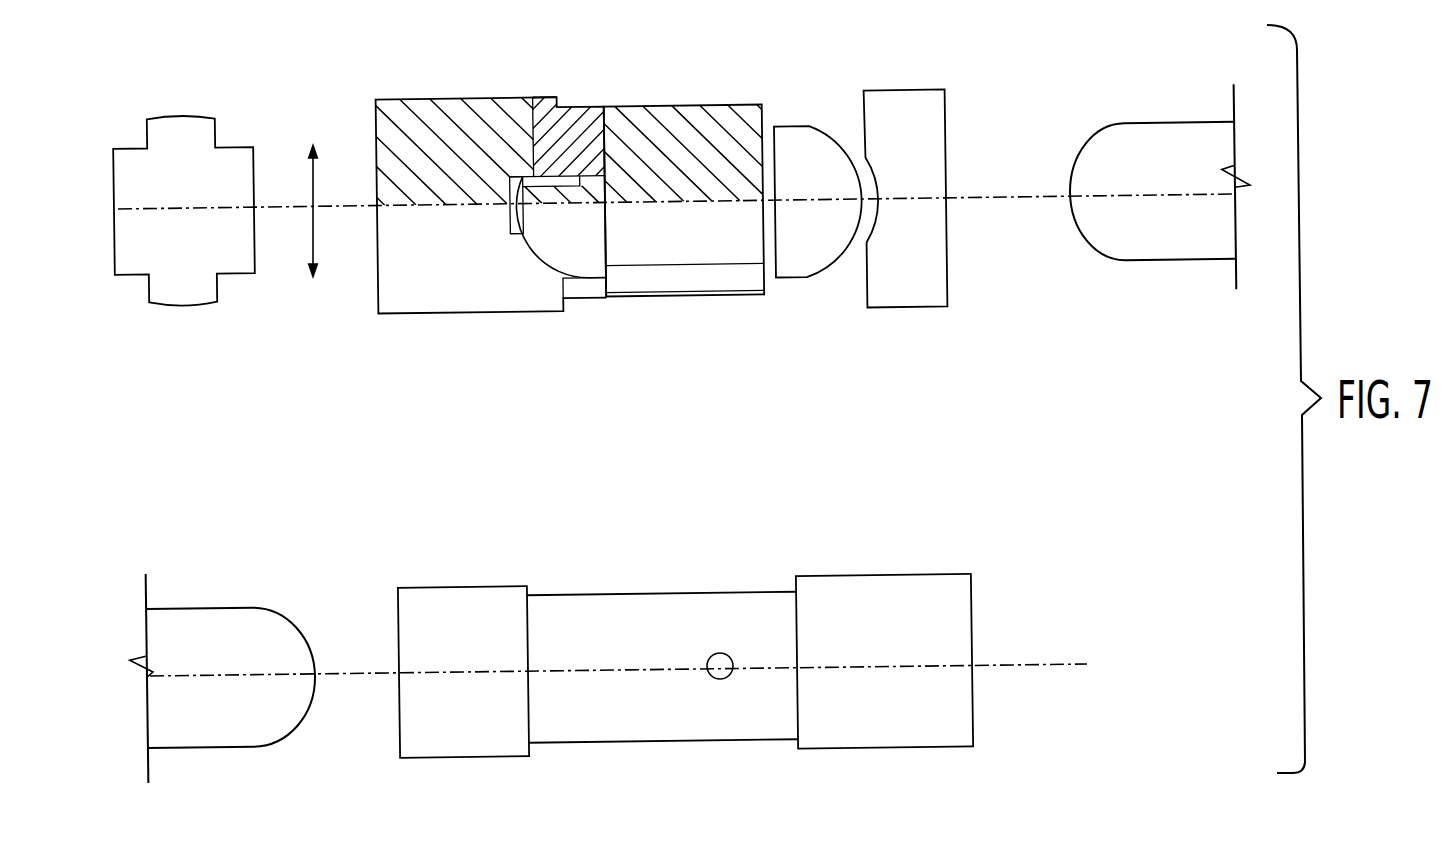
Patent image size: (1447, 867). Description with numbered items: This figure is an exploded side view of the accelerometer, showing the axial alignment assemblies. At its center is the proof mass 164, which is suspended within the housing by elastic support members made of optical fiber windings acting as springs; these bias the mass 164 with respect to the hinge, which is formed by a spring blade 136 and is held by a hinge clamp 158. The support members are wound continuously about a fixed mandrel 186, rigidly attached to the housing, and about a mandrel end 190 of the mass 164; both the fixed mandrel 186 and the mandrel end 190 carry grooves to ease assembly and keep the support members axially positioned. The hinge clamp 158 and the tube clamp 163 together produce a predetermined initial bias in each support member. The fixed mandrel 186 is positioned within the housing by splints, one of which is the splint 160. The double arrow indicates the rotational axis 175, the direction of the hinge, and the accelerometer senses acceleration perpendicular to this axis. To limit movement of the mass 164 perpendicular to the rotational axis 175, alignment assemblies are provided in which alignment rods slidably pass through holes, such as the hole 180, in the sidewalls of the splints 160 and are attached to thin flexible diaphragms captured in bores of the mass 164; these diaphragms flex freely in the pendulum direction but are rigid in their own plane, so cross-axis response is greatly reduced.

The spring blade 136 is at (567, 102).
The hinge clamp 158 is at (407, 100).
The splint 160 is at (288, 610).
The tube clamp 163 is at (940, 118).
The mass 164 is at (190, 118).
The rotational axis 175 is at (313, 193).
The hole 180 is at (718, 653).
The fixed mandrel 186 is at (792, 132).
The mandrel end 190 is at (572, 262).